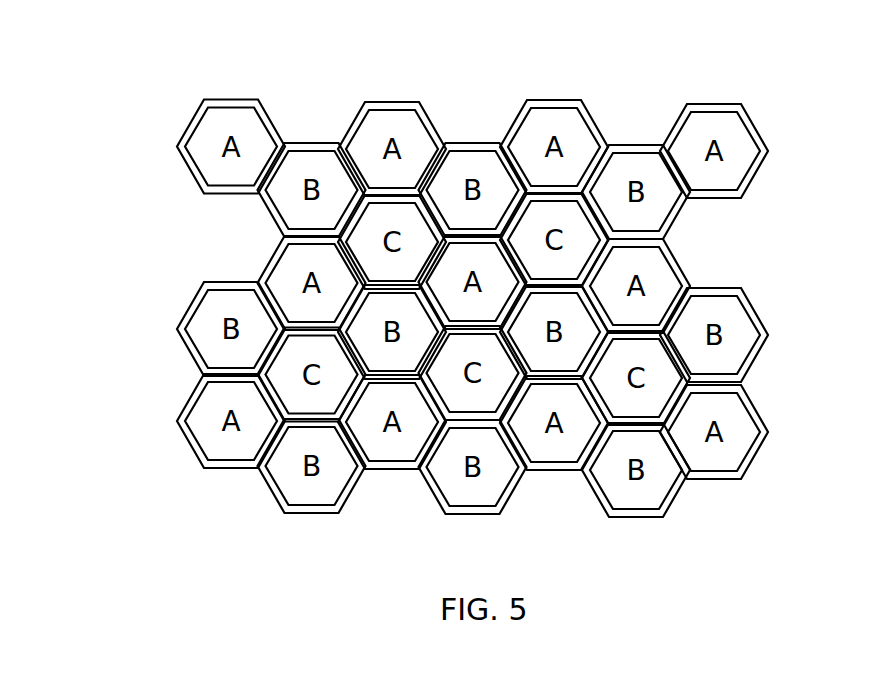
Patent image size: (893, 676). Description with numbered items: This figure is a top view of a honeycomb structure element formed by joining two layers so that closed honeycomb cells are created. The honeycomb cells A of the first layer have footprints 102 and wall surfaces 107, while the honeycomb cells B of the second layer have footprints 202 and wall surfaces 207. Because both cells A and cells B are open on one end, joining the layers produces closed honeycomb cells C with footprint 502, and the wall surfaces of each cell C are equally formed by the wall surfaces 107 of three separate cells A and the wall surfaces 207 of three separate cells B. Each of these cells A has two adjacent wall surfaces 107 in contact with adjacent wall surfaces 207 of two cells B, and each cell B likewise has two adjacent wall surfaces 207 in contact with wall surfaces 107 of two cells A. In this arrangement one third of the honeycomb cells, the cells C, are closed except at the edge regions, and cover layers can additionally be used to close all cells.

The wall surfaces 107 is at (403, 107).
The footprints 102 is at (370, 142).
The footprints 202 is at (230, 308).
The wall surfaces 207 is at (197, 358).
The footprint 502 is at (312, 400).